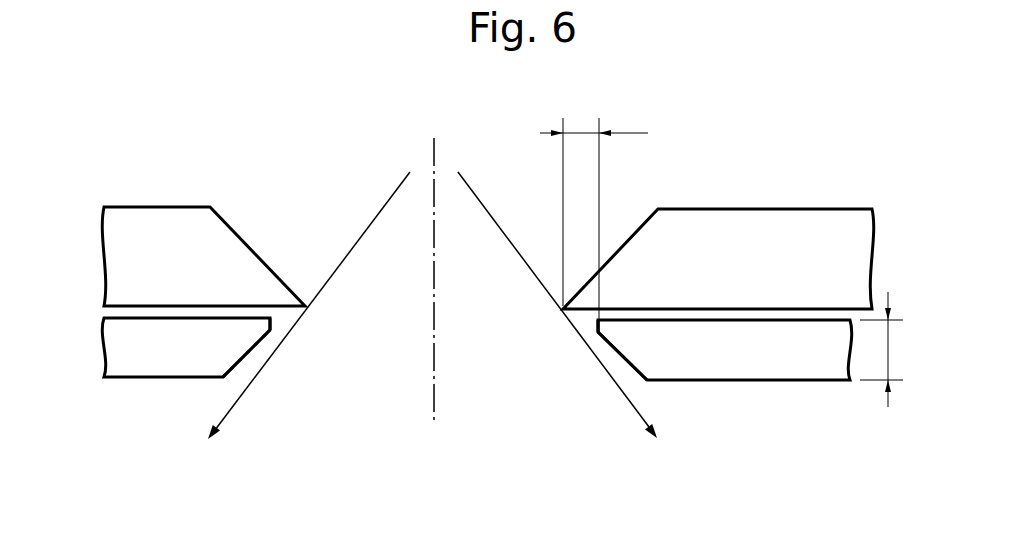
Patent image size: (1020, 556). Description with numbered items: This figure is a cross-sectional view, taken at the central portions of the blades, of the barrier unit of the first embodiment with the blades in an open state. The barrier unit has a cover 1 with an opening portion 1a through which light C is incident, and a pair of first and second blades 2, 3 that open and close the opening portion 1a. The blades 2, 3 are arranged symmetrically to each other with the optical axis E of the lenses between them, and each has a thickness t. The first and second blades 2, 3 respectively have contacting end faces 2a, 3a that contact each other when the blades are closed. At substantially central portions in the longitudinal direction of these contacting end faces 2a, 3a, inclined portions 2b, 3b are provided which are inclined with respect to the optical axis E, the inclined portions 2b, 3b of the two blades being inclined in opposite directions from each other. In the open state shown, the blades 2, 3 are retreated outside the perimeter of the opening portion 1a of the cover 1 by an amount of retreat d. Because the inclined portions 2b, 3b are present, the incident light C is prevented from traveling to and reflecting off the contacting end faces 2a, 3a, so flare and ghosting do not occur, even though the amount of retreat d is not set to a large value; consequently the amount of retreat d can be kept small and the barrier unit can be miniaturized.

The cover 1 is at (166, 218).
The opening portion 1a is at (386, 406).
The first blade 2 is at (767, 362).
The contacting end face 2a is at (596, 329).
The inclined portion 2b is at (629, 364).
The second blade 3 is at (175, 362).
The contacting end face 3a is at (272, 325).
The inclined portion 3b is at (247, 358).
The light c is at (557, 305).
The optical axis E is at (435, 258).
The amount of retreat d is at (594, 219).
The thickness t is at (885, 349).